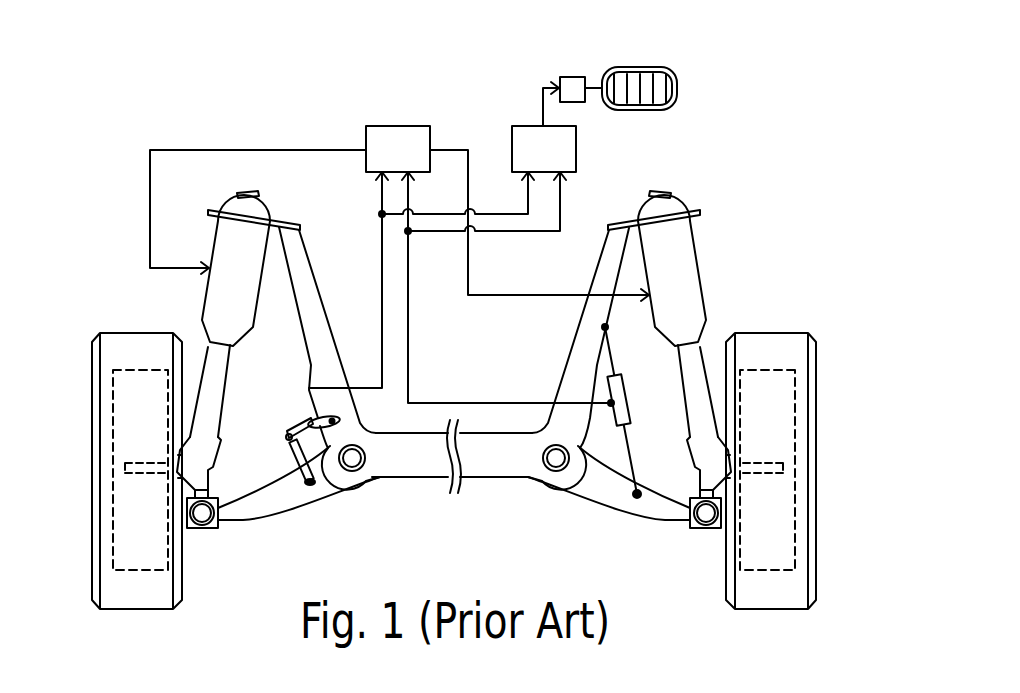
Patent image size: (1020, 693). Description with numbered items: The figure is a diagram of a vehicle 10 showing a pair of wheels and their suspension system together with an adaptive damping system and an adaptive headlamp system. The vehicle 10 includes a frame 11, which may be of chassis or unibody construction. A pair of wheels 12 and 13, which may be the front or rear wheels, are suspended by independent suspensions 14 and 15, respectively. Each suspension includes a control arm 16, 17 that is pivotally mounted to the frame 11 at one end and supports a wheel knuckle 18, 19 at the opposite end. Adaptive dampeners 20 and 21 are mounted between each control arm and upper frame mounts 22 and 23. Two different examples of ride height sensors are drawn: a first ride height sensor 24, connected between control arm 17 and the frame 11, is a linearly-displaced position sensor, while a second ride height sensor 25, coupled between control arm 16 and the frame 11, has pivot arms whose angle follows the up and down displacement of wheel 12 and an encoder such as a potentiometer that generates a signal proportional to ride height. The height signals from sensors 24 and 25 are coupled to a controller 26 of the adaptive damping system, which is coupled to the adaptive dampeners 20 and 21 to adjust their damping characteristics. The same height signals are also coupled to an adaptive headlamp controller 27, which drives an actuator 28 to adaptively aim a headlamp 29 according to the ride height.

The vehicle 10 is at (288, 106).
The frame 11 is at (416, 486).
The wheel 12 is at (142, 572).
The wheel 13 is at (755, 569).
The independent suspension 14 is at (307, 230).
The independent suspension 15 is at (709, 269).
The control arm 16 is at (277, 508).
The control arm 17 is at (602, 497).
The wheel knuckle 18 is at (212, 472).
The wheel knuckle 19 is at (707, 473).
The adaptive dampener 20 is at (222, 292).
The adaptive dampener 21 is at (683, 300).
The upper frame mount 22 is at (207, 212).
The upper frame mount 23 is at (698, 209).
The first ride height sensor 24 is at (626, 400).
The second ride height sensor 25 is at (292, 460).
The controller 26 is at (395, 125).
The adaptive headlamp controller 27 is at (577, 150).
The actuator 28 is at (568, 76).
The headlamp 29 is at (653, 66).